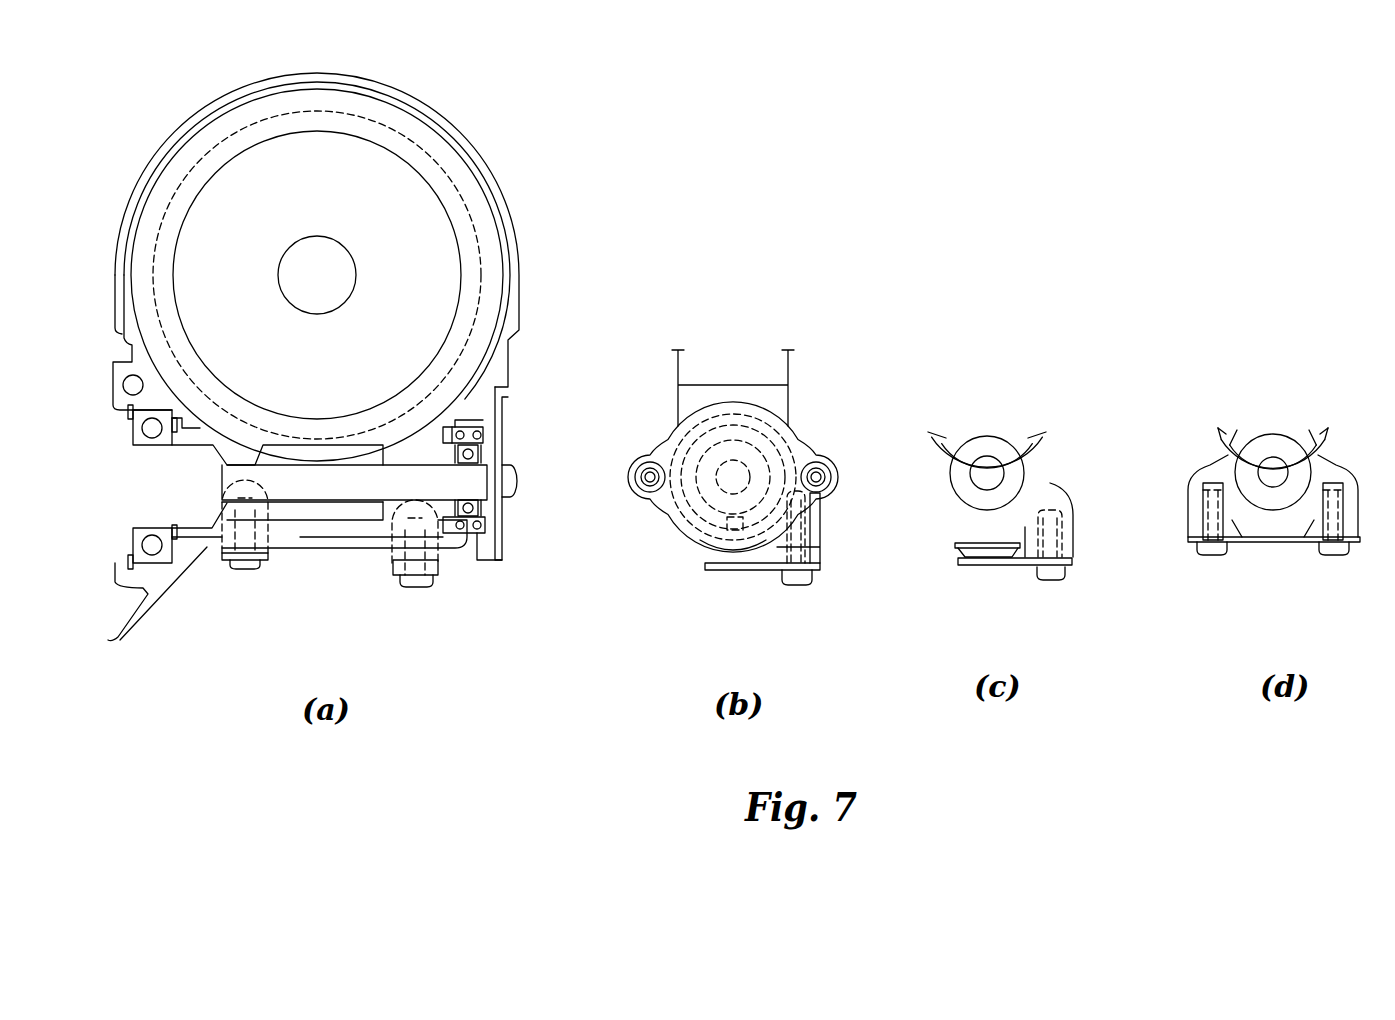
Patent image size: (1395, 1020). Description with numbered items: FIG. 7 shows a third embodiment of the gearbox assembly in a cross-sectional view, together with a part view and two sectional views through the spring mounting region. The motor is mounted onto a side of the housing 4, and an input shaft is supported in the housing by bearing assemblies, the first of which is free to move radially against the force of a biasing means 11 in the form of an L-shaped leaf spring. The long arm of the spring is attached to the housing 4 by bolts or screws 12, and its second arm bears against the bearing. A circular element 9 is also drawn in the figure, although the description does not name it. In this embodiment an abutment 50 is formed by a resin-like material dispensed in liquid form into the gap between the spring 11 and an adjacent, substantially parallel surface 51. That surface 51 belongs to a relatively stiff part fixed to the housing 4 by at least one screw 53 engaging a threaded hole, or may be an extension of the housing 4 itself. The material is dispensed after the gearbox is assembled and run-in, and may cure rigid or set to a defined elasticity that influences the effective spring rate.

The housing 4 is at (510, 363).
The fan housing 9 is at (490, 195).
The biasing means 11 is at (360, 555).
The bolts or screws 12 is at (245, 566).
The abutment 50 is at (712, 555).
The surface 51 is at (730, 568).
The screw 53 is at (800, 583).